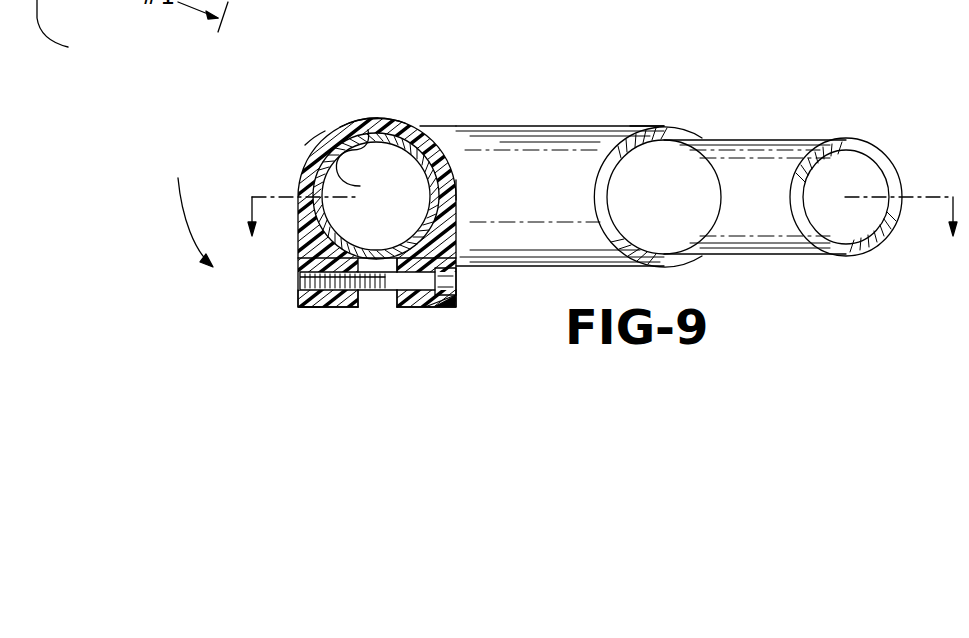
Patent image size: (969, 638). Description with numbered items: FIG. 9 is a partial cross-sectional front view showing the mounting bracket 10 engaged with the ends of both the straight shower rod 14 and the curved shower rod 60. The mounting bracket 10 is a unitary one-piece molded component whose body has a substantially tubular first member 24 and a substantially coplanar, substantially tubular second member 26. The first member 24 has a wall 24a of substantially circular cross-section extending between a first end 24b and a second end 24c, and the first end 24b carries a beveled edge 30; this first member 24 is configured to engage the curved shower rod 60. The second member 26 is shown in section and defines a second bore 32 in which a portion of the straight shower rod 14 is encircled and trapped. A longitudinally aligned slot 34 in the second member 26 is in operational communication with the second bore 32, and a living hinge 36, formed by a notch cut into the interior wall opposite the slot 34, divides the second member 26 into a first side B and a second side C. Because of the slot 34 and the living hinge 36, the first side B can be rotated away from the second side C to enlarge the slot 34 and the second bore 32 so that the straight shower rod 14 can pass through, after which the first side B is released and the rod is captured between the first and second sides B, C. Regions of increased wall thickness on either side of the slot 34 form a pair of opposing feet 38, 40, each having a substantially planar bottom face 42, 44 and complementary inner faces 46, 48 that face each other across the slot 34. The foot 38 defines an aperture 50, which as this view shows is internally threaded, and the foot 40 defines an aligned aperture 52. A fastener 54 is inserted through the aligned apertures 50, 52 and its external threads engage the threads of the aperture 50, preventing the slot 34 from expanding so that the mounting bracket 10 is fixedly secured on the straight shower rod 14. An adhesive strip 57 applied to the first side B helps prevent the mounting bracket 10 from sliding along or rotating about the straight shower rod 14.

The mounting bracket 10 is at (670, 66).
The straight shower rod 14 is at (388, 124).
The first member 24 is at (490, 121).
The wall 24a is at (523, 140).
The first end 24b is at (656, 126).
The second end 24c is at (427, 126).
The second member 26 is at (300, 174).
The beveled edge 30 is at (608, 175).
The second bore 32 is at (360, 143).
The slot 34 is at (380, 264).
The living hinge 36 is at (378, 119).
The foot 38 is at (292, 304).
The foot 40 is at (424, 313).
The bottom face 42 is at (317, 307).
The bottom face 44 is at (410, 307).
The inner face 46 is at (362, 293).
The inner face 48 is at (386, 298).
The aperture 50 is at (300, 281).
The aperture 52 is at (432, 300).
The fastener 54 is at (448, 282).
The adhesive strip 57 is at (363, 163).
The curved shower rod 60 is at (762, 134).
The first side B is at (312, 148).
The second side C is at (458, 187).